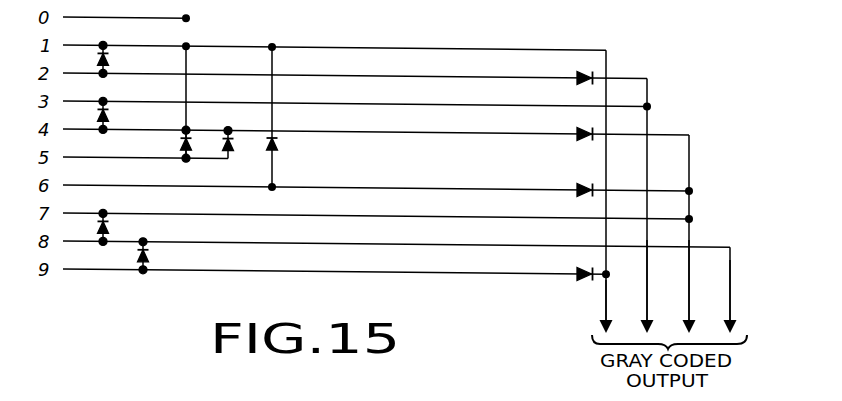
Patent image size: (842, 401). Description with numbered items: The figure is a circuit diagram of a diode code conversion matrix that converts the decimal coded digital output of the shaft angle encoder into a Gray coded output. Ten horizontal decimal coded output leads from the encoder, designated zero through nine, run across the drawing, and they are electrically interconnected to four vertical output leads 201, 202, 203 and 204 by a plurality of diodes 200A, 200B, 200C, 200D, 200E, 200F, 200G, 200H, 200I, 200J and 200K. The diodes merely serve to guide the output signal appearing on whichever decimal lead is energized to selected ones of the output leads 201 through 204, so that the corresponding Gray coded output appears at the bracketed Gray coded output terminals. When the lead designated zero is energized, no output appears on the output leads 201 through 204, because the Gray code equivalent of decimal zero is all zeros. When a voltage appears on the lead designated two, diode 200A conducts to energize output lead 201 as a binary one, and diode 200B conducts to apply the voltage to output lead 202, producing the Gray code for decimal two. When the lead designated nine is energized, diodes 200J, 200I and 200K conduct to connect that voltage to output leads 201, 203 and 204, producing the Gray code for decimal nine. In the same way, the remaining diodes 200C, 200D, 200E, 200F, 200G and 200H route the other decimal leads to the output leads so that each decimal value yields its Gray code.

The diode 200A is at (109, 59).
The diode 200B is at (585, 71).
The diode 200C is at (109, 115).
The diode 200D is at (181, 145).
The diode 200E is at (248, 148).
The diode 200F is at (585, 128).
The diode 200G is at (277, 147).
The diode 200H is at (585, 184).
The diode 200I is at (108, 225).
The diode 200J is at (152, 252).
The diode 200K is at (584, 268).
The output lead 201 is at (605, 309).
The output lead 202 is at (647, 263).
The output lead 203 is at (689, 264).
The output lead 204 is at (733, 295).